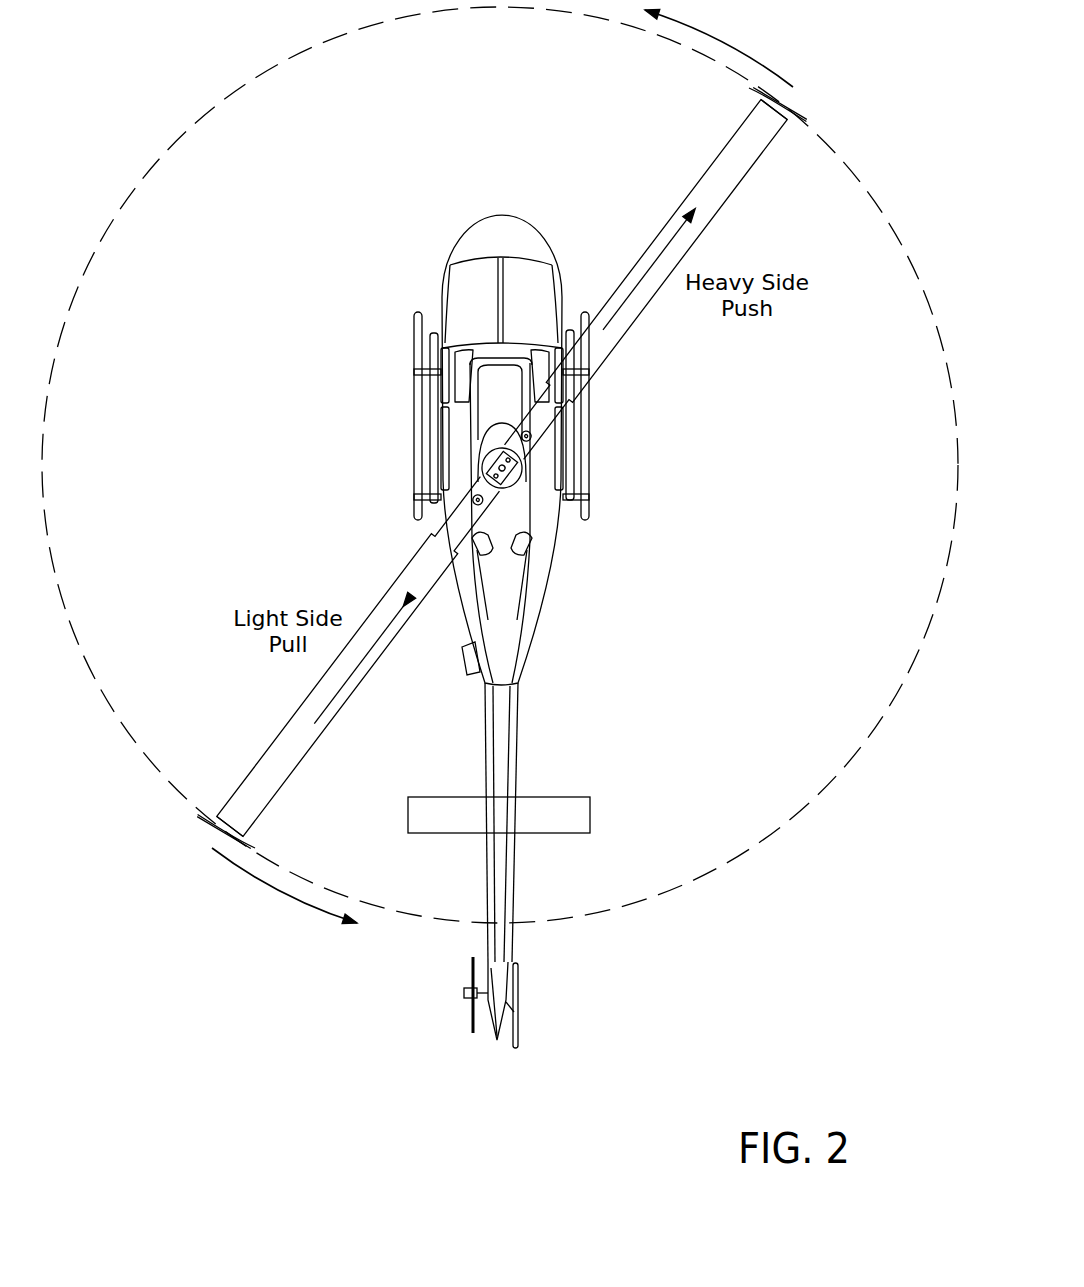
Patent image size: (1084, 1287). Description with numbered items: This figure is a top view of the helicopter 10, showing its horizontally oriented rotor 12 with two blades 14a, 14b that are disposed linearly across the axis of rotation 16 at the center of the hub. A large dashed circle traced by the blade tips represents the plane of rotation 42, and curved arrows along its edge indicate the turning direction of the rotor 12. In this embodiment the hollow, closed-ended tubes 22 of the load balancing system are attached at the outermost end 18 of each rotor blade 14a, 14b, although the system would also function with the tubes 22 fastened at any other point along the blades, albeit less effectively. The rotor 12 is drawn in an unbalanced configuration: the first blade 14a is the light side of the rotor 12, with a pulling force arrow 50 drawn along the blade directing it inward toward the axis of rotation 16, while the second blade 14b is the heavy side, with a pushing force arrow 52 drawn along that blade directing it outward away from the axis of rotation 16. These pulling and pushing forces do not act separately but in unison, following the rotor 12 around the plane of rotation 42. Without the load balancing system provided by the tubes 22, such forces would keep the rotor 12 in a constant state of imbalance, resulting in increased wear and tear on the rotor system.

The helicopter 10 is at (478, 233).
The rotor 12 is at (521, 487).
The first blade 14a is at (307, 748).
The second blade 14b is at (713, 167).
The axis of rotation 16 is at (518, 478).
The outermost end 18 is at (770, 121).
The tube 22 is at (802, 130).
The plane of rotation 42 is at (236, 95).
The force arrow 50 is at (352, 660).
The heavy side push force 52 is at (652, 272).